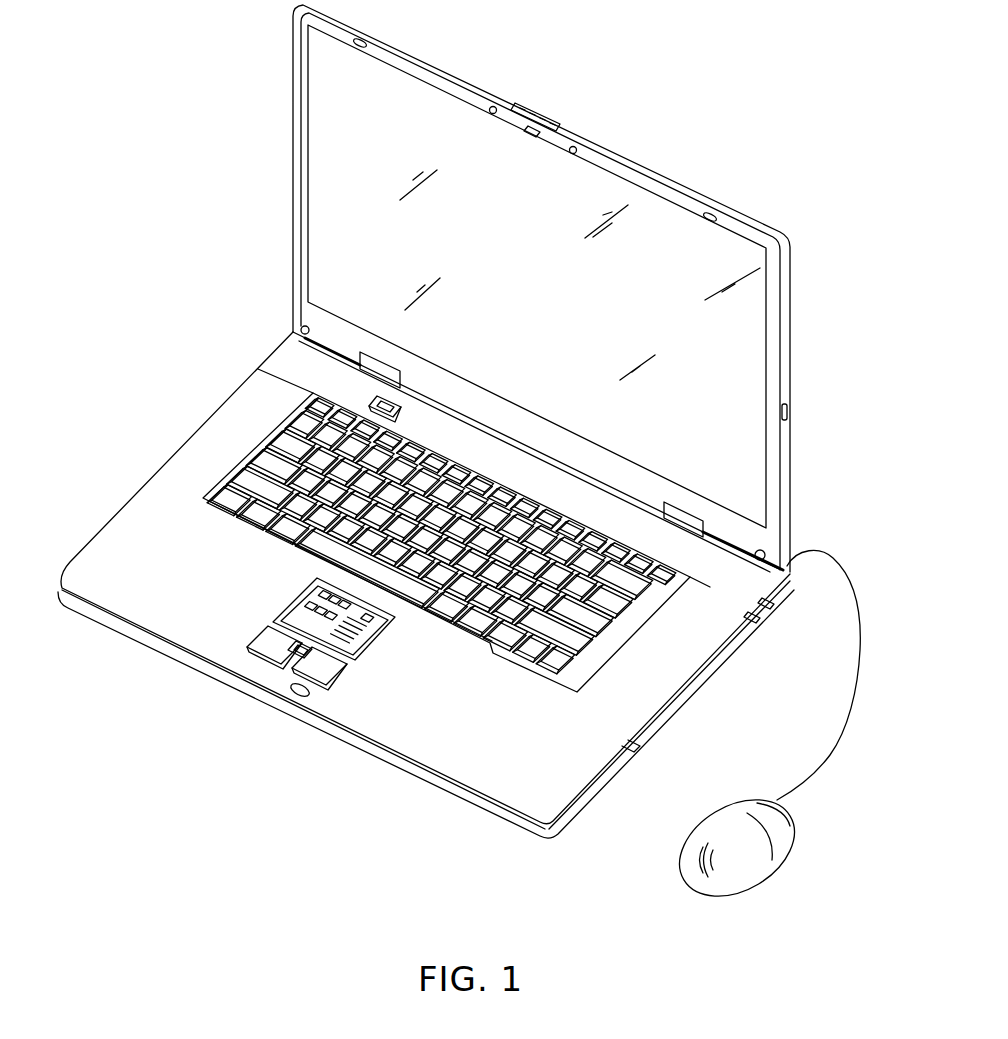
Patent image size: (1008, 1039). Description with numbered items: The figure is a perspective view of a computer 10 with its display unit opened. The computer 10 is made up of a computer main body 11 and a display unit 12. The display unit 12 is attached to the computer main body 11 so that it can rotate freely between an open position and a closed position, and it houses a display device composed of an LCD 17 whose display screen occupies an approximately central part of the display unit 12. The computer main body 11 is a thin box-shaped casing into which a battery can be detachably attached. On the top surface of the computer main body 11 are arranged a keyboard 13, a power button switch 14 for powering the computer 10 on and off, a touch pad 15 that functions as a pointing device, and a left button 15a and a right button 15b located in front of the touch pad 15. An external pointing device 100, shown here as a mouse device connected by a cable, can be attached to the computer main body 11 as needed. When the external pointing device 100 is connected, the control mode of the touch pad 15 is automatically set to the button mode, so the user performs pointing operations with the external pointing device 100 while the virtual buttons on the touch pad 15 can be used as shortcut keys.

The computer 10 is at (736, 700).
The computer main body 11 is at (592, 785).
The display unit 12 is at (787, 437).
The keyboard 13 is at (592, 650).
The power button switch 14 is at (380, 400).
The touch pad 15 is at (278, 623).
The left button 15a is at (268, 643).
The right button 15b is at (324, 667).
The LCD 17 is at (752, 305).
The external pointing device 100 is at (768, 860).